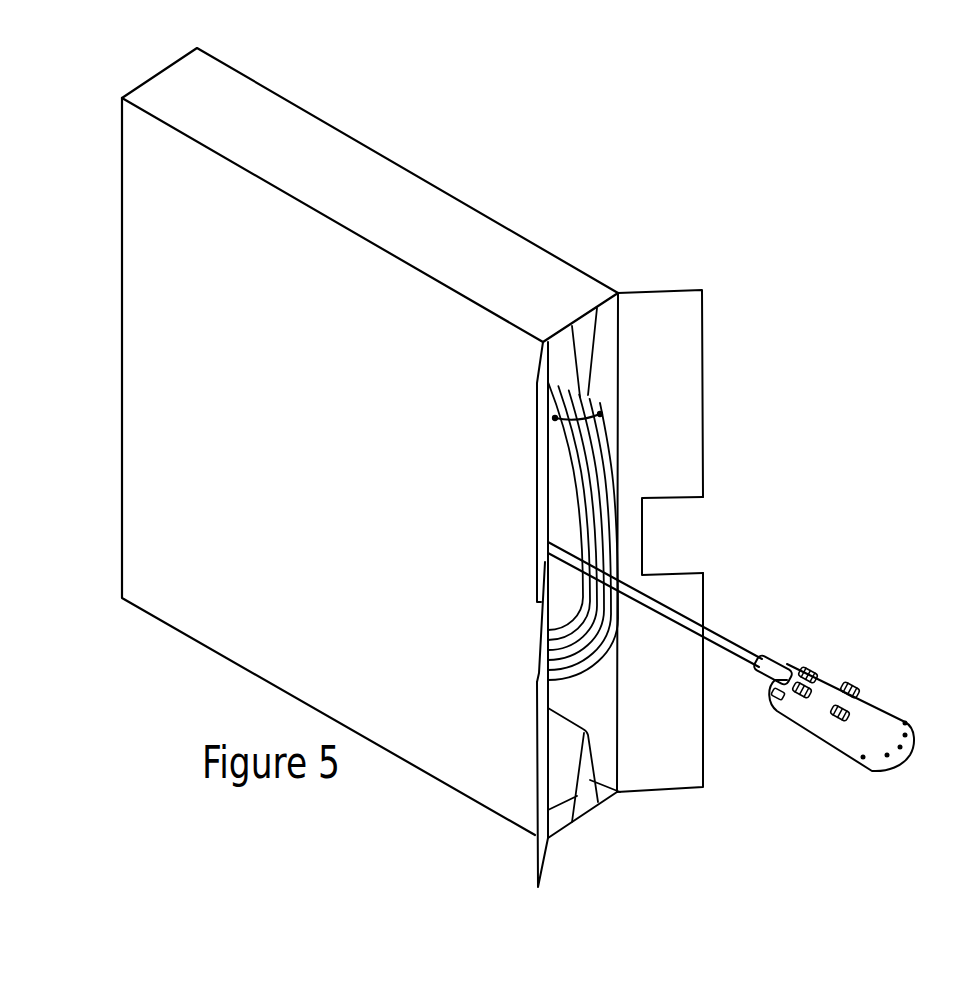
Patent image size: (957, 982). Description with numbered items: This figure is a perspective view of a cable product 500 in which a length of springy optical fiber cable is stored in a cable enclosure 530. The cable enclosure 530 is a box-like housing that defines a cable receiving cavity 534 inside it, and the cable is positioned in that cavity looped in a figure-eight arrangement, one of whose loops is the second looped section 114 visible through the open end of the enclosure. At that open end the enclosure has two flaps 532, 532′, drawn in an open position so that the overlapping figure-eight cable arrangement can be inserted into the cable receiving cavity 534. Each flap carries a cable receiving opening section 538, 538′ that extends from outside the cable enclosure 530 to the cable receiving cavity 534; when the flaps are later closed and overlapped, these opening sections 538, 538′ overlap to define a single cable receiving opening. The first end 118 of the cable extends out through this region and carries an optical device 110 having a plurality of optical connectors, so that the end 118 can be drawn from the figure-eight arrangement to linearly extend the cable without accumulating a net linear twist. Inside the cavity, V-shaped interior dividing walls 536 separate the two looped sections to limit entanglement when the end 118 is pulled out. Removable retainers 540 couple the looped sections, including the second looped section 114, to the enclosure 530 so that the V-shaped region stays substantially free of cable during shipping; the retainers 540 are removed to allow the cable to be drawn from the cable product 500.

The cable product 500 is at (560, 192).
The cable enclosure 530 is at (273, 93).
The flap 532 is at (670, 290).
The flap 532′ is at (539, 370).
The cable receiving cavity 534 is at (607, 330).
The interior dividing walls 536 is at (593, 330).
The cable receiving opening section 538 is at (682, 502).
The cable receiving opening section 538′ is at (536, 600).
The removable retainers 540 is at (599, 410).
The second looped section 114 is at (610, 487).
The first end 118 is at (752, 655).
The optical device 110 is at (897, 765).